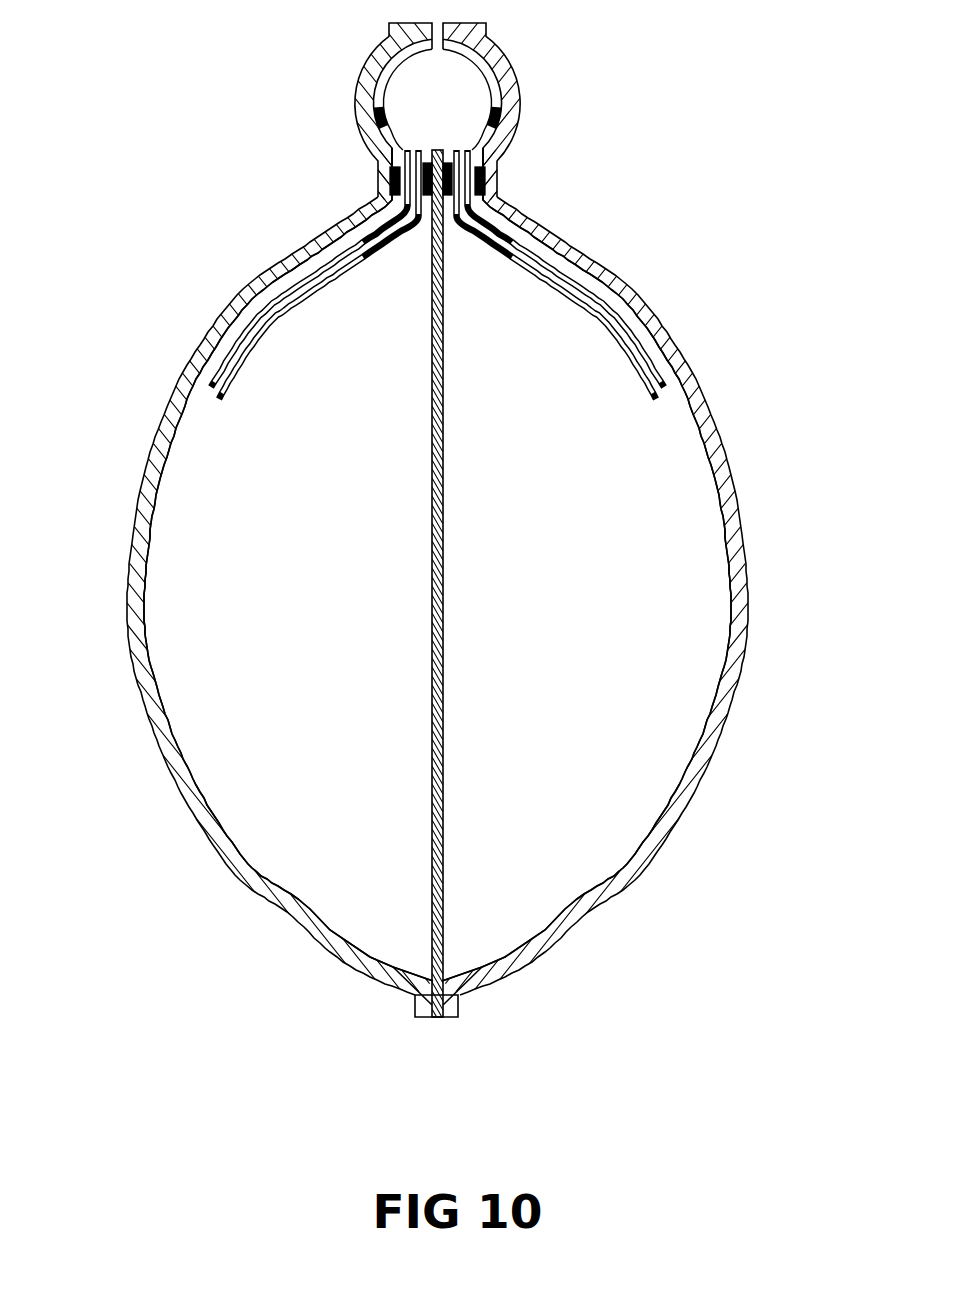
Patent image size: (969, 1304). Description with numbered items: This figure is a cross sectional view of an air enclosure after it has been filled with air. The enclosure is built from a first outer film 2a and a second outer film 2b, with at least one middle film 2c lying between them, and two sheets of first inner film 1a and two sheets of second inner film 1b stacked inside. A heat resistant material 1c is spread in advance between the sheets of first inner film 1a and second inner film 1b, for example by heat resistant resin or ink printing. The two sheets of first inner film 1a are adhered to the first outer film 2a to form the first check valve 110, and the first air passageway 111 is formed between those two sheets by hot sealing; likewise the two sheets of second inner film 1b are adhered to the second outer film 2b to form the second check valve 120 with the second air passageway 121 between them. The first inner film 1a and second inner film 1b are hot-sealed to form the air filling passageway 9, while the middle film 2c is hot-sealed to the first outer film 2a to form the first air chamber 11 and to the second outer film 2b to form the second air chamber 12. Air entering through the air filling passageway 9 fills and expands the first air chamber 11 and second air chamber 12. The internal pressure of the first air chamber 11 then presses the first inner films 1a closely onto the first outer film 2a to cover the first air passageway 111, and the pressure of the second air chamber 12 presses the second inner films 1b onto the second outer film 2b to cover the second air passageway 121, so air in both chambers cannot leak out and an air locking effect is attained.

The air filling passageway 9 is at (447, 93).
The first check valve 110 is at (380, 123).
The second check valve 120 is at (495, 123).
The heat resistant material 1c is at (412, 163).
The first air passageway 111 is at (325, 268).
The second air passageway 121 is at (550, 268).
The first inner film 1a is at (272, 327).
The second inner film 1b is at (612, 340).
The first air chamber 11 is at (215, 617).
The second air chamber 12 is at (675, 630).
The first outer film 2a is at (152, 718).
The second outer film 2b is at (722, 720).
The middle film 2c is at (433, 1016).